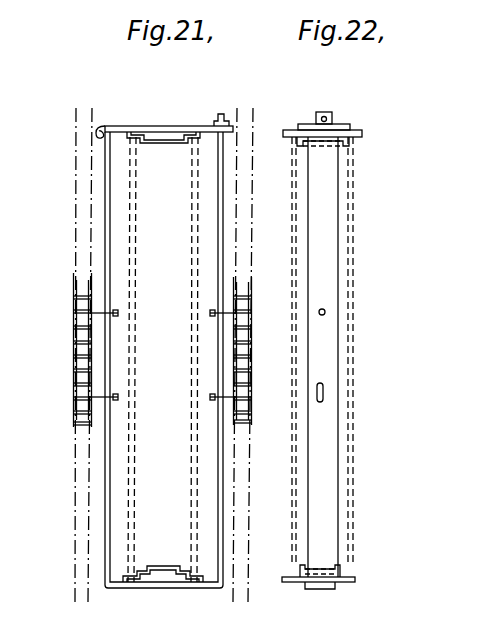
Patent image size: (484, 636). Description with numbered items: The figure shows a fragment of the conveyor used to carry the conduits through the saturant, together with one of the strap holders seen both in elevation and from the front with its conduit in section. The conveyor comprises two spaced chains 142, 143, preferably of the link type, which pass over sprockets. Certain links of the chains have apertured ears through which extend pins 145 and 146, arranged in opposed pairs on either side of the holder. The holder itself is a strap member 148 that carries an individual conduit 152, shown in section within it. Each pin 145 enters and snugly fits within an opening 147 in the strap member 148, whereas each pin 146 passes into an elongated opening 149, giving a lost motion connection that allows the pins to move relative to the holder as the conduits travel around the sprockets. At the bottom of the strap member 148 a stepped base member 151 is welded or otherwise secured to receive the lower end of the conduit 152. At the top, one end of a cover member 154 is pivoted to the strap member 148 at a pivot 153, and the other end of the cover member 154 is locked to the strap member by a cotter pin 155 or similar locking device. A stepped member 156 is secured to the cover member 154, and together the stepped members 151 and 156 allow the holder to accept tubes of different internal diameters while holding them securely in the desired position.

In FIG. 21, the chain 142 is at (71, 371).
In FIG. 21, the chain 143 is at (252, 377).
In FIG. 21, the pin 145 is at (210, 313).
In FIG. 21, the pin 146 is at (210, 397).
In FIG. 22, the opening 147 is at (326, 311).
In FIG. 21, the strap member 148 is at (222, 240).
In FIG. 22, the strap member 148 is at (326, 248).
In FIG. 22, the elongated opening 149 is at (324, 394).
In FIG. 21, the stepped base member 151 is at (147, 581).
In FIG. 22, the stepped base member 151 is at (358, 580).
In FIG. 21, the conduit 152 is at (133, 505).
In FIG. 21, the pivot 153 is at (100, 125).
In FIG. 21, the cover member 154 is at (168, 124).
In FIG. 22, the cover member 154 is at (305, 125).
In FIG. 21, the cotter pin 155 is at (226, 116).
In FIG. 22, the cotter pin 155 is at (333, 119).
In FIG. 21, the stepped member 156 is at (165, 147).
In FIG. 22, the stepped member 156 is at (363, 134).